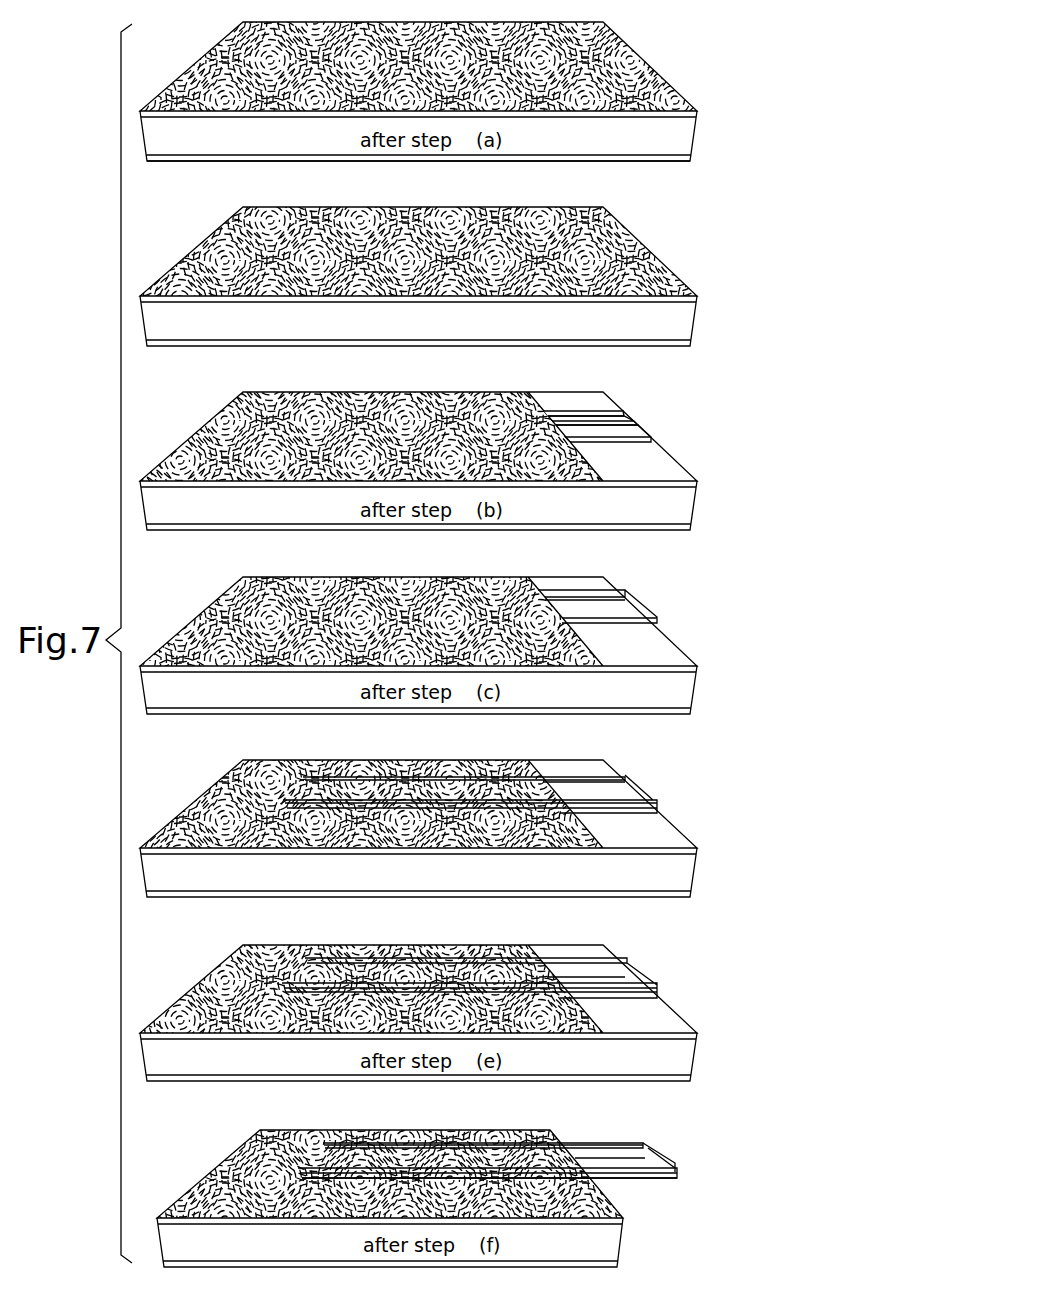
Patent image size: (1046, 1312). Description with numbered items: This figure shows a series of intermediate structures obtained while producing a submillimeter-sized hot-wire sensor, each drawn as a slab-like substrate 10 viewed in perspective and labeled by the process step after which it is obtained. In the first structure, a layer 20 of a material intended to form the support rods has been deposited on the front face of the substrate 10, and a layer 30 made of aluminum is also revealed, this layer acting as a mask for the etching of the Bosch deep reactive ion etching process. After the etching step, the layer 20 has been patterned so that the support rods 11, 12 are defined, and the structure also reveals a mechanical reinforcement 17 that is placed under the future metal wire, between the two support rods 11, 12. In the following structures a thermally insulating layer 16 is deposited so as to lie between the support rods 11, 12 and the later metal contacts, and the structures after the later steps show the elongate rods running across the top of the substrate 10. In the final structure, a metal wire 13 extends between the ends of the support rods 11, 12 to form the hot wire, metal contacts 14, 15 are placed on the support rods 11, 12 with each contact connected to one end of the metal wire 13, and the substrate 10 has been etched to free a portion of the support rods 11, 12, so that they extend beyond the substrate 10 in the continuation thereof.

The substrate 10 is at (678, 138).
The support rod 11 is at (636, 447).
The support rod 12 is at (613, 404).
The metal wire 13 is at (669, 1153).
The metal contact 14 is at (627, 1176).
The metal contact 15 is at (587, 1145).
The thermally insulating layer 16 is at (646, 600).
The mechanical reinforcement 17 is at (641, 418).
The layer 20 is at (612, 55).
The layer made of aluminum 30 is at (178, 163).